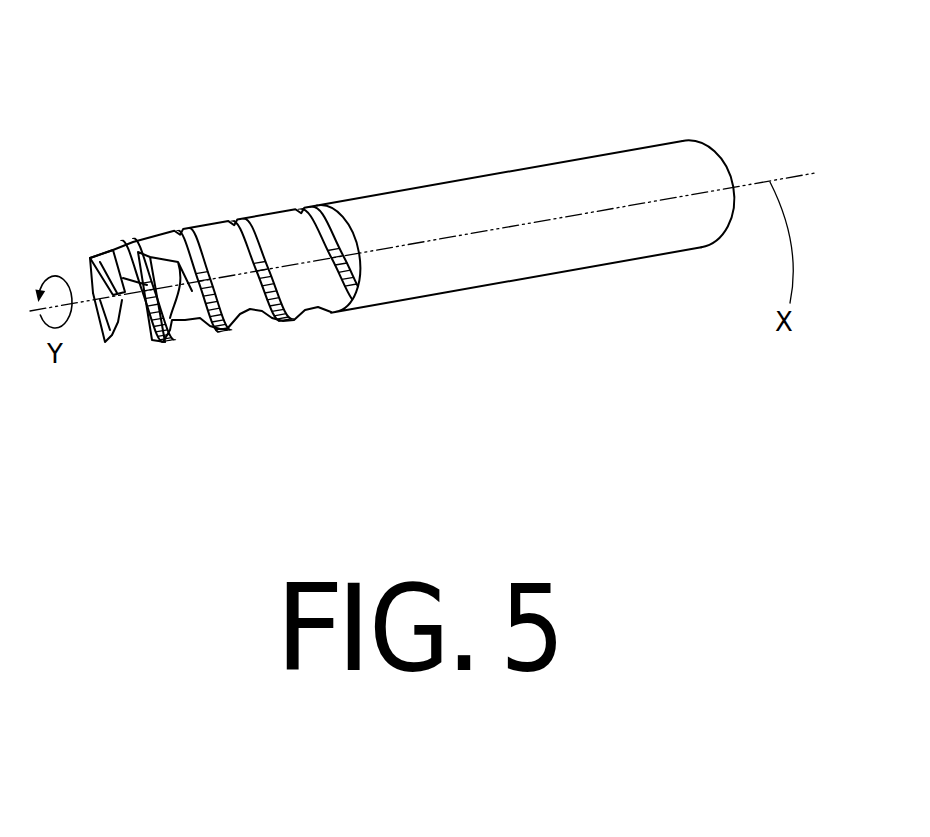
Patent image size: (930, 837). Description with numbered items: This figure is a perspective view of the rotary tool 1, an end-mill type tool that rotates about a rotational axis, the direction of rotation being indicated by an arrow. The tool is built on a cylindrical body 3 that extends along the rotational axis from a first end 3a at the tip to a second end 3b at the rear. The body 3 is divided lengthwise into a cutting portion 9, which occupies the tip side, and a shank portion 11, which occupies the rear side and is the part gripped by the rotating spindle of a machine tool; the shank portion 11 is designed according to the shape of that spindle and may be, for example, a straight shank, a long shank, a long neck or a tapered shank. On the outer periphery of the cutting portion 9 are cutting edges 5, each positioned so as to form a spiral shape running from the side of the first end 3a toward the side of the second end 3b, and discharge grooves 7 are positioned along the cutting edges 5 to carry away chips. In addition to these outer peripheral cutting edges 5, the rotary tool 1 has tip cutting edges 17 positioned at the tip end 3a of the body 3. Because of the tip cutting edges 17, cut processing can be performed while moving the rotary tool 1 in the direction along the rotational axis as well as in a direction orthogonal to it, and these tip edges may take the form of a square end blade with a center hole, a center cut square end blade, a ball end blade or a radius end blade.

The rotary tool 1 is at (503, 122).
The body 3 is at (145, 463).
The first end 3a is at (123, 297).
The second end 3b is at (733, 167).
The cutting edges 5 is at (193, 250).
The discharge grooves 7 is at (276, 255).
The cutting portion 9 is at (113, 378).
The shank portion 11 is at (380, 323).
The tip cutting edges 17 is at (126, 293).